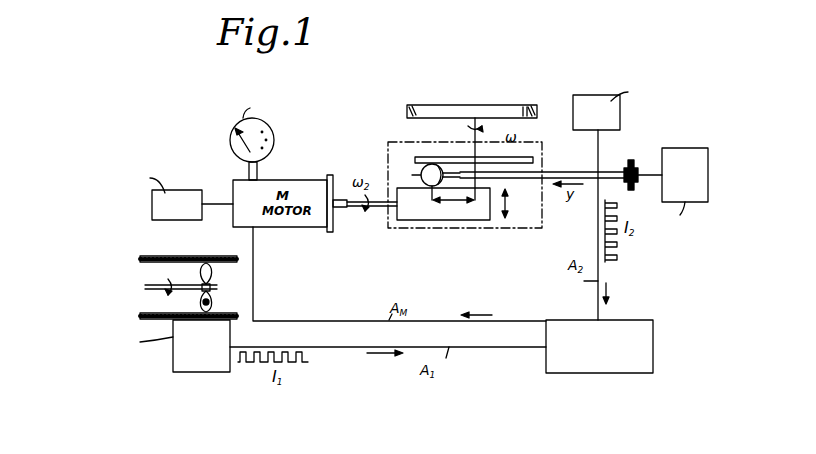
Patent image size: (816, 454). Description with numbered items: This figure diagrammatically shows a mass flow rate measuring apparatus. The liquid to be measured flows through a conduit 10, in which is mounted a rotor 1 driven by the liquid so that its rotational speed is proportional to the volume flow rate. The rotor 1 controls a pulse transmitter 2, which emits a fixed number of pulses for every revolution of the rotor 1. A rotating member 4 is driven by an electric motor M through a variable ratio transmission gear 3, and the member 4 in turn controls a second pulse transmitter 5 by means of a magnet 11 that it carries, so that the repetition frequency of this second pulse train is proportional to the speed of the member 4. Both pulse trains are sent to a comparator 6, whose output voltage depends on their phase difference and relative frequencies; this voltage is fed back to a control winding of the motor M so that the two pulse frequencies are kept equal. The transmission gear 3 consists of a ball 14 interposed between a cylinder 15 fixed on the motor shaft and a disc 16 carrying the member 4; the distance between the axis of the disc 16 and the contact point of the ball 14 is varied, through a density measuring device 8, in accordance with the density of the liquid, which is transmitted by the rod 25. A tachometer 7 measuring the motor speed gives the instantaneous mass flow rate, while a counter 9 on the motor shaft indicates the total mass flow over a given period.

The rotor 1 is at (210, 271).
The pulse transmitter 2 is at (195, 362).
The transmission gear 3 is at (480, 229).
The rotating member 4 is at (483, 110).
The pulse transmitter 5 is at (598, 104).
The comparator 6 is at (642, 330).
The tachometer 7 is at (274, 142).
The device 8 is at (680, 165).
The counter 9 is at (193, 198).
The conduit 10 is at (185, 256).
The magnet 11 is at (525, 112).
The ball 14 is at (421, 168).
The cylinder 15 is at (415, 210).
The disc 16 is at (533, 159).
The rod 25 is at (568, 170).